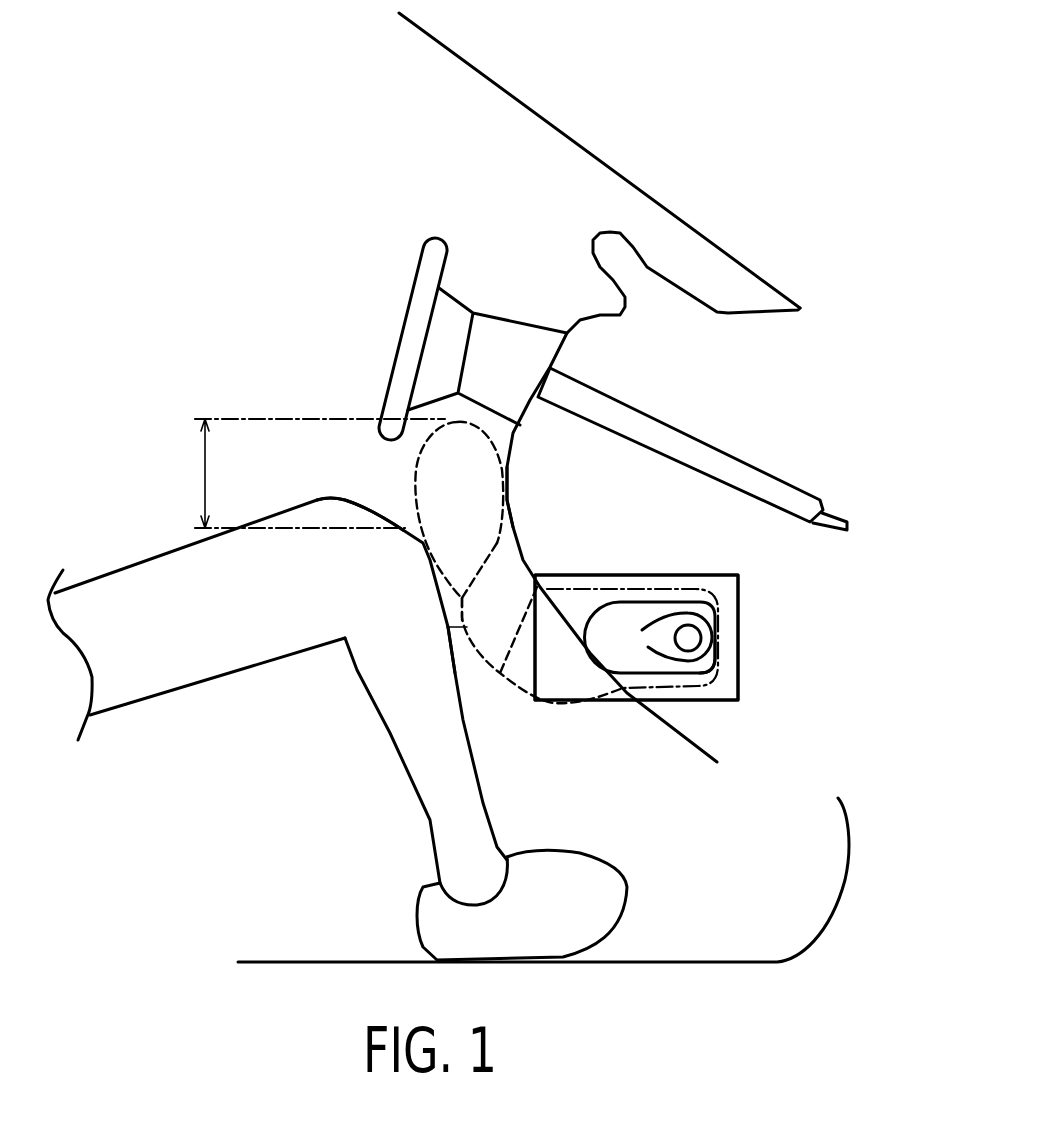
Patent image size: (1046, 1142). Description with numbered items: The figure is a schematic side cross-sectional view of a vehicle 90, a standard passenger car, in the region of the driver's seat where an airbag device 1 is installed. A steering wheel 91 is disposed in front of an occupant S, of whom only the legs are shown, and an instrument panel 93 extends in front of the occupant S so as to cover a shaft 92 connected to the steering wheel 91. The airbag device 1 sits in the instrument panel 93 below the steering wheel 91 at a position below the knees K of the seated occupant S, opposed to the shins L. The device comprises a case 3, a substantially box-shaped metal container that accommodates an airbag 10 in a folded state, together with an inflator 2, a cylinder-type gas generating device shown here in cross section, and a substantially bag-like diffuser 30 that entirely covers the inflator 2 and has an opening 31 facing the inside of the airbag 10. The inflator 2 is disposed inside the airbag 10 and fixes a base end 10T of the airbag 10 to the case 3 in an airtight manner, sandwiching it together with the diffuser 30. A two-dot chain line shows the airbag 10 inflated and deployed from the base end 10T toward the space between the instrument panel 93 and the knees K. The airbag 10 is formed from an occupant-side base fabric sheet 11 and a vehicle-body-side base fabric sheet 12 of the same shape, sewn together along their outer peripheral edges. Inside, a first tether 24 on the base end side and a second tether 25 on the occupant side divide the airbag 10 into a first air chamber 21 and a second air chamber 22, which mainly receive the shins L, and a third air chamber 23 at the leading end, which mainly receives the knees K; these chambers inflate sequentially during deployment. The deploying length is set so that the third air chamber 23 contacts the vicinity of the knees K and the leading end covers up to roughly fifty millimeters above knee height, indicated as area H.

The airbag device 1 is at (745, 618).
The inflator 2 is at (692, 638).
The case 3 is at (740, 585).
The airbag 10 is at (657, 665).
The base end 10T is at (717, 665).
The occupant-side base fabric sheet 11 is at (448, 627).
The vehicle-body-side base fabric sheet 12 is at (505, 507).
The first air chamber 21 is at (563, 697).
The second air chamber 22 is at (478, 613).
The third air chamber 23 is at (482, 477).
The first tether 24 is at (453, 675).
The second tether 25 is at (493, 557).
The diffuser 30 is at (672, 602).
The opening 31 is at (647, 637).
The vehicle 90 is at (703, 210).
The steering wheel 91 is at (421, 281).
The shaft 92 is at (753, 470).
The instrument panel 93 is at (676, 727).
The occupant S is at (137, 557).
The knees K is at (397, 507).
The shins L is at (460, 690).
The area H is at (313, 473).